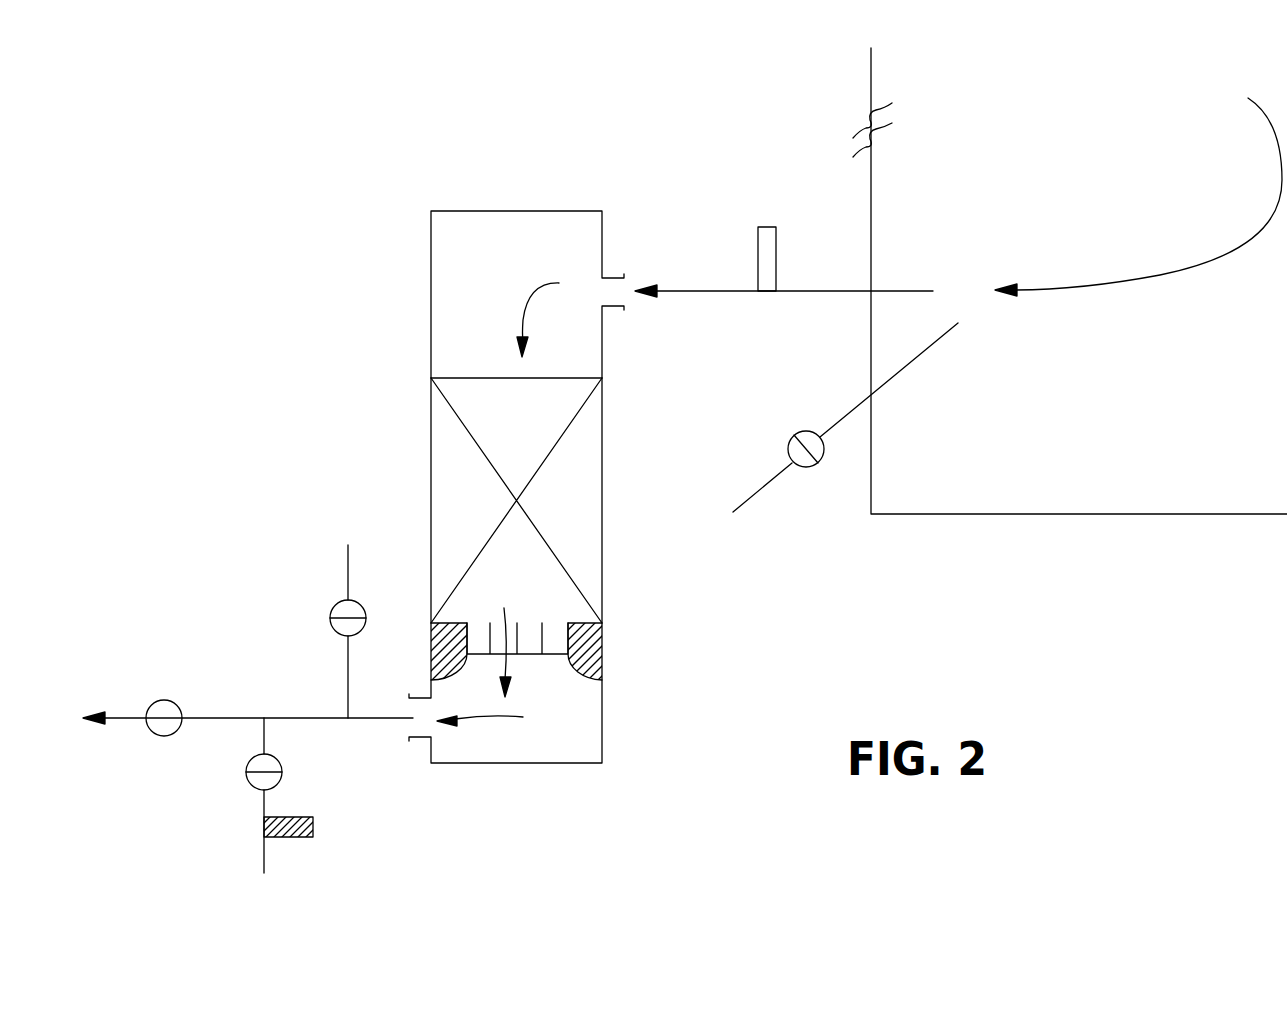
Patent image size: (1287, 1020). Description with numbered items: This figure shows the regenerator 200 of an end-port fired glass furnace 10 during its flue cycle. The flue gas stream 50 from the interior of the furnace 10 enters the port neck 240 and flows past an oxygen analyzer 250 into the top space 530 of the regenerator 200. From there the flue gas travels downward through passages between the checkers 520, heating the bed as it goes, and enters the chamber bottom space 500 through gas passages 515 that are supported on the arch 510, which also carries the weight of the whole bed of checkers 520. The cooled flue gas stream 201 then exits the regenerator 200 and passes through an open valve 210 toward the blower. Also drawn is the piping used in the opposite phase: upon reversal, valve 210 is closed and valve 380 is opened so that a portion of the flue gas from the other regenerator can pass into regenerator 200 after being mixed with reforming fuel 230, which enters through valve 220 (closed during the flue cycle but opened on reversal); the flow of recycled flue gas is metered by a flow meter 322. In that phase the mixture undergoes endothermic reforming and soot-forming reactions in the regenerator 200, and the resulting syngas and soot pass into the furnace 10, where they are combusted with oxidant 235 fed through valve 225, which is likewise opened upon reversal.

The regenerator 200 is at (477, 211).
The top space 530 is at (486, 262).
The checkers 520 is at (592, 517).
The gas passages 515 is at (557, 622).
The arch 510 is at (590, 650).
The chamber bottom space 500 is at (576, 751).
The port neck 240 is at (807, 292).
The oxygen analyzer 250 is at (767, 225).
The glass furnace 10 is at (1210, 514).
The flue gas stream 50 is at (1163, 309).
The oxidant 235 is at (748, 505).
The valve 225 is at (800, 467).
The cooled flue gas stream 201 is at (386, 742).
The valve 210 is at (167, 737).
The reforming fuel 230 is at (347, 565).
The valve 220 is at (330, 620).
The valve 380 is at (282, 763).
The flow meter 322 is at (303, 838).